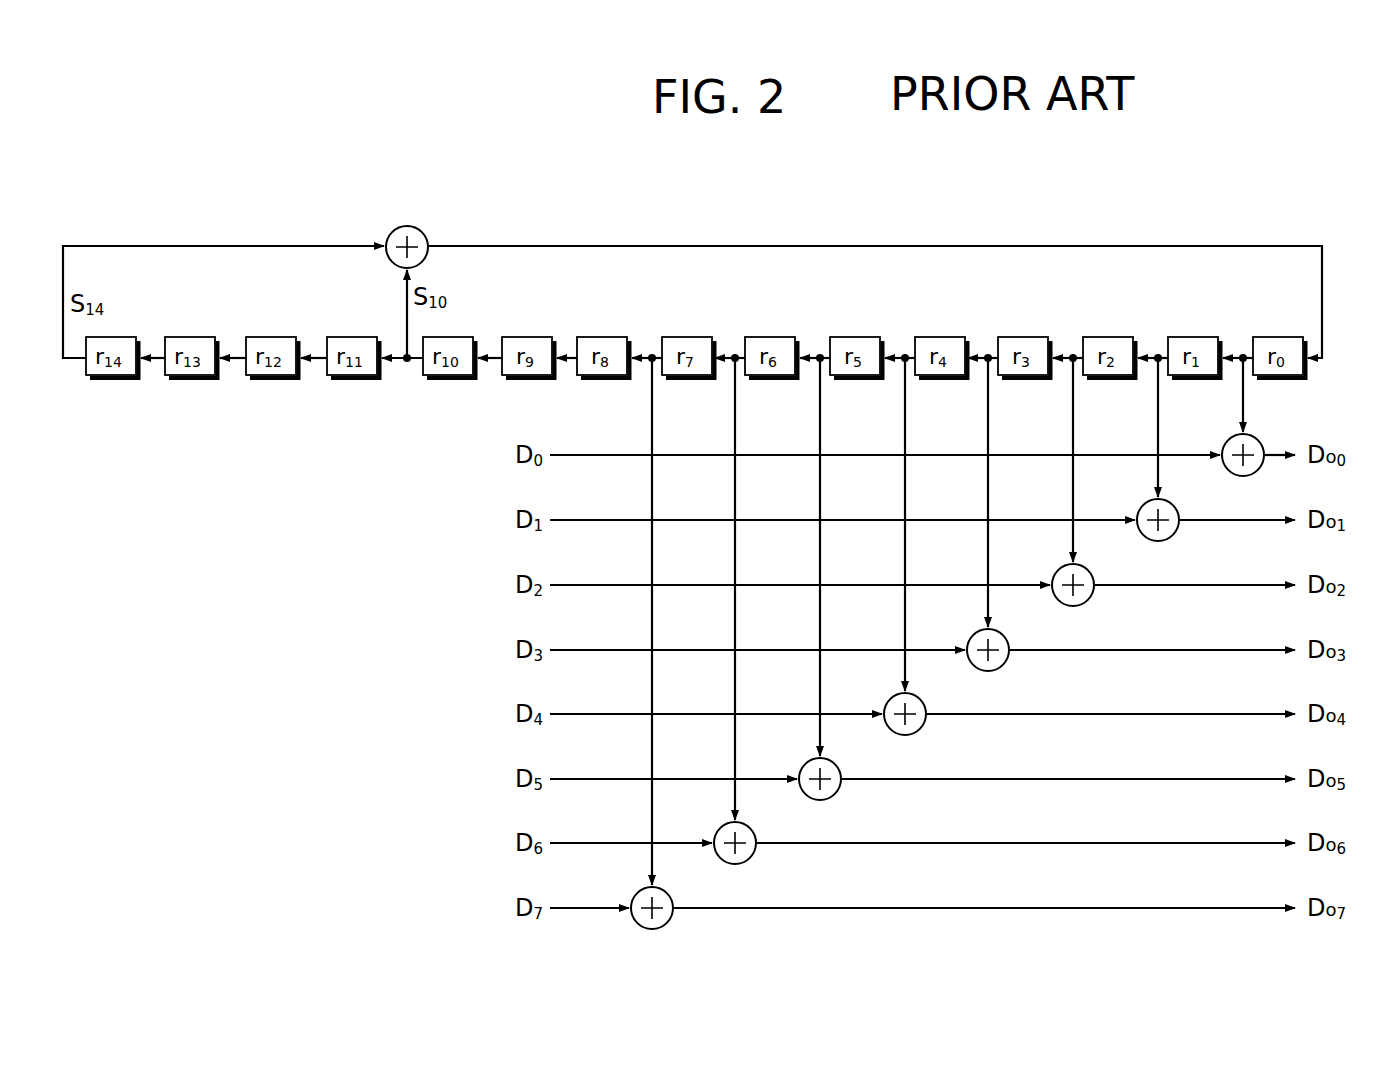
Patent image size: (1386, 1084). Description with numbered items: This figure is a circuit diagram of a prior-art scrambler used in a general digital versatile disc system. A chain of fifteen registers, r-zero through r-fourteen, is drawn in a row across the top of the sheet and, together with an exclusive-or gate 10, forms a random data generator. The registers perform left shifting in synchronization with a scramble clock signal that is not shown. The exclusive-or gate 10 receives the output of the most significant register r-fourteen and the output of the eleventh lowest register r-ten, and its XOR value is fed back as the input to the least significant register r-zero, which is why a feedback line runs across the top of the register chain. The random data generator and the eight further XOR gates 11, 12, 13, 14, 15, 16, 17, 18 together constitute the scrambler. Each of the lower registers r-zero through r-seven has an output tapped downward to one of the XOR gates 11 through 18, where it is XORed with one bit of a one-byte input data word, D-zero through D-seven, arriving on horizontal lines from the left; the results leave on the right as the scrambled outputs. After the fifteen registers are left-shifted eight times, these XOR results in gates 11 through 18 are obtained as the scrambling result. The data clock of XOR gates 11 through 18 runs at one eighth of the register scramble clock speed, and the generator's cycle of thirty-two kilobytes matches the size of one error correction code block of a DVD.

The exclusive-or gate 10 is at (407, 226).
The XOR gate 11 is at (1258, 441).
The XOR gate 12 is at (1174, 509).
The XOR gate 13 is at (1089, 574).
The XOR gate 14 is at (1004, 639).
The XOR gate 15 is at (921, 703).
The XOR gate 16 is at (836, 768).
The XOR gate 17 is at (751, 832).
The XOR gate 18 is at (668, 897).